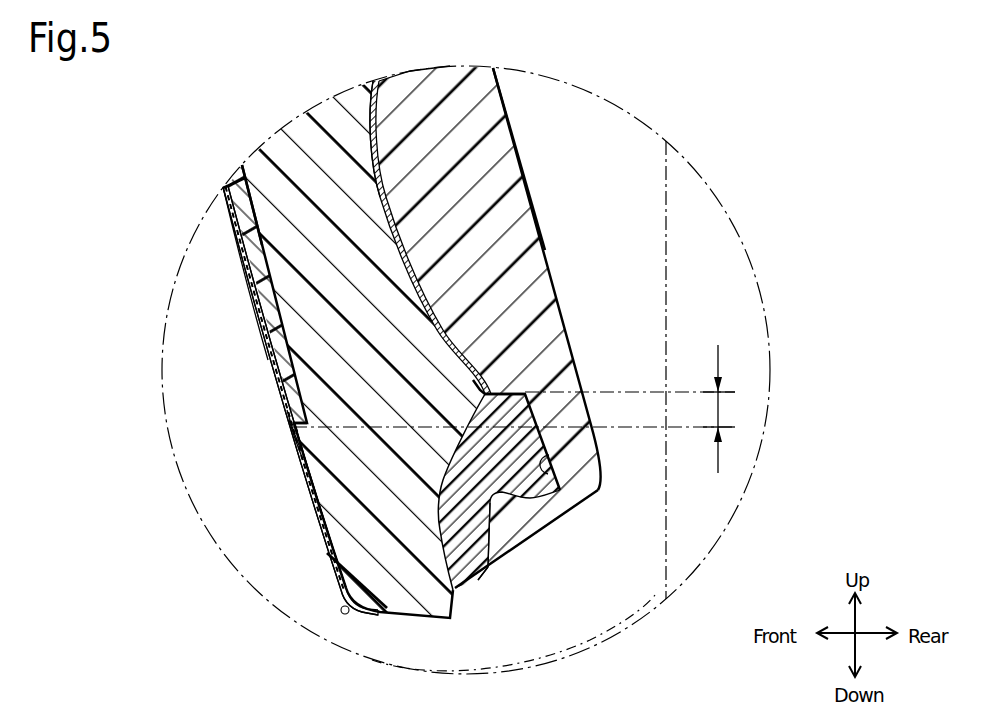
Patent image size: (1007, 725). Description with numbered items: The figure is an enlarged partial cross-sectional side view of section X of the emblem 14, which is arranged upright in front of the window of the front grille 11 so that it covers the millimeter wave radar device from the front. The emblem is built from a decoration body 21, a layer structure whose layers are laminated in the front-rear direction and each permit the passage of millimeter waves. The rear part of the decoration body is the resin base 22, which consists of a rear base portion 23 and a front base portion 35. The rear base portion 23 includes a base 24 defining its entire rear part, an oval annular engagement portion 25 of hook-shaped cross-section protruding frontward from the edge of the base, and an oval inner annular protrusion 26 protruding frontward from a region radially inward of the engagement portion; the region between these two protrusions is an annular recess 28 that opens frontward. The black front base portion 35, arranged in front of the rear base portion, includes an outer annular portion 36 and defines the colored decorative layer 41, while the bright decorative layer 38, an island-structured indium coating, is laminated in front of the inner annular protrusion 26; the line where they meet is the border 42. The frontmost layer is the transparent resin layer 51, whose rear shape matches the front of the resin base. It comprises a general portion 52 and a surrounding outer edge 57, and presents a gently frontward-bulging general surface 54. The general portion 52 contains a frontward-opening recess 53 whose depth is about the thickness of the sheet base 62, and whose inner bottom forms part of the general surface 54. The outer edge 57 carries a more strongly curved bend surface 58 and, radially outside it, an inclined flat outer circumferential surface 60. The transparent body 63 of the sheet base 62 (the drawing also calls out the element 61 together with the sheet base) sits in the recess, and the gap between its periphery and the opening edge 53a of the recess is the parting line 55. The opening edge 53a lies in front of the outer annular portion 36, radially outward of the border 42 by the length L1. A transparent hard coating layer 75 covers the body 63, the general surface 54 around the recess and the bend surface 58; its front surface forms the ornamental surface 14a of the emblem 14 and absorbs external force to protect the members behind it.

The front grille 11 is at (643, 612).
The emblem 14 is at (240, 530).
The ornamental surface 14a is at (229, 217).
The decoration body 21 is at (300, 30).
The resin base 22 is at (407, 82).
The rear base portion 23 is at (519, 159).
The base 24 is at (503, 173).
The annular engagement portion 25 is at (518, 542).
The inner annular protrusion 26 is at (412, 233).
The annular recess 28 is at (550, 458).
The front base portion 35 is at (483, 573).
The outer annular portion 36 is at (489, 535).
The bright decorative layer 38 is at (377, 127).
The colored decorative layer 41 is at (473, 570).
The border 42 is at (500, 372).
The transparent resin layer 51 is at (328, 113).
The general portion 52 is at (252, 167).
The recess 53 is at (303, 418).
The opening edge 53a is at (296, 440).
The general surface 54 is at (293, 380).
The parting line 55 is at (290, 430).
The outer edge 57 is at (398, 597).
The bend surface 58 is at (348, 610).
The outer circumferential surface 60 is at (430, 620).
The protective film 61 is at (287, 387).
The sheet base 62 is at (282, 388).
The body 63 is at (260, 277).
The hard coating layer 75 is at (240, 248).
The section X is at (735, 222).
The length L1 is at (718, 407).